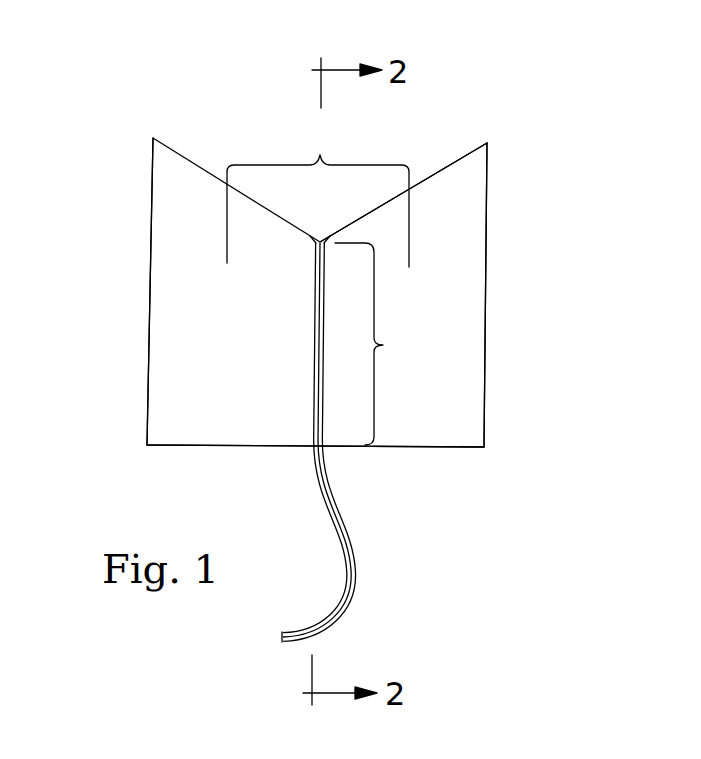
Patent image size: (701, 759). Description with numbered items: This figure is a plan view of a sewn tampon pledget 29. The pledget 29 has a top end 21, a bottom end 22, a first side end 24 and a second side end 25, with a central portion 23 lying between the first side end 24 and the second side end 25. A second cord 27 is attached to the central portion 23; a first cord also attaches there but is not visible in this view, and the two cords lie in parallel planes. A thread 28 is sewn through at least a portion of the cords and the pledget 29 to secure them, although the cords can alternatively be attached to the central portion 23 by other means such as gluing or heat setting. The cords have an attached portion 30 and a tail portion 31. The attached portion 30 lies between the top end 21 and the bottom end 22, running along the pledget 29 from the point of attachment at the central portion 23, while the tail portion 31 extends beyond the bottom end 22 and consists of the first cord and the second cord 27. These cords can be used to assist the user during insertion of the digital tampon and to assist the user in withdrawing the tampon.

The top end 21 is at (440, 170).
The bottom end 22 is at (407, 450).
The central portion 23 is at (318, 192).
The first side end 24 is at (150, 288).
The second side end 25 is at (485, 297).
The second cord 27 is at (315, 243).
The thread 28 is at (327, 243).
The pledget 29 is at (130, 72).
The attached portion 30 is at (381, 344).
The tail portion 31 is at (293, 514).